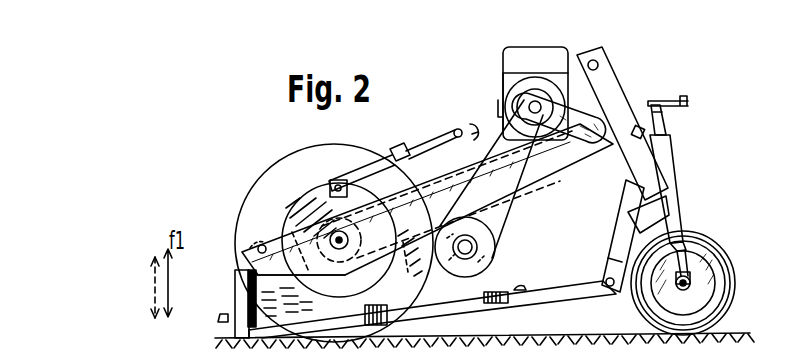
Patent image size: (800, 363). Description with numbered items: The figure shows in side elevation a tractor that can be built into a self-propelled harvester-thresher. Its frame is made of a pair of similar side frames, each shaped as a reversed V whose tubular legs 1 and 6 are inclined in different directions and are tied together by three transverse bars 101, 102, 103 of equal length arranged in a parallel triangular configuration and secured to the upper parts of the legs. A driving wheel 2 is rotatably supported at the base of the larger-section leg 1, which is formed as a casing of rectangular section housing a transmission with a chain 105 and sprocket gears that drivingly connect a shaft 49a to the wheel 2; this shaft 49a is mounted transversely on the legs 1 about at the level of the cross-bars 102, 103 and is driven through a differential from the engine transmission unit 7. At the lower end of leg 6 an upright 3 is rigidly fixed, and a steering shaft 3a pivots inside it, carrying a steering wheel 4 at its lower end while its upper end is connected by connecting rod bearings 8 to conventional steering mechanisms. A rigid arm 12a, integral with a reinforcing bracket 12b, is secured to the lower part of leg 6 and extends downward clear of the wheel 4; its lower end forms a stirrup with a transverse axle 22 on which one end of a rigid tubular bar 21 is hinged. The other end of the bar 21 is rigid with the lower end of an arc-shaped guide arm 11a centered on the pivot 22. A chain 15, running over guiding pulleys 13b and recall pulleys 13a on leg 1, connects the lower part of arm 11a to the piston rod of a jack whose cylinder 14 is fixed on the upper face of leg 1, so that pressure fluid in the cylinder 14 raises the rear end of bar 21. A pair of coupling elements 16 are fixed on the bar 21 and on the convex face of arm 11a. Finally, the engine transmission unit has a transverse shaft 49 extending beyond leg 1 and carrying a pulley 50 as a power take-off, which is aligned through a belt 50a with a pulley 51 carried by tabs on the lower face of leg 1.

The leg 1 is at (548, 172).
The driving wheel 2 is at (290, 168).
The upright 3 is at (667, 162).
The steering shaft 3a is at (661, 119).
The steering wheel 4 is at (732, 272).
The leg 6 is at (625, 74).
The engine transmission unit 7 is at (494, 60).
The connecting rod bearings 8 is at (683, 98).
The guide arm 11a is at (236, 288).
The rigid arm 12a is at (618, 234).
The reinforcing bracket 12b is at (648, 197).
The recall pulleys 13a is at (464, 130).
The guiding pulleys 13b is at (238, 268).
The cylinder 14 is at (366, 165).
The chain 15 is at (266, 247).
The coupling elements 16 is at (224, 318).
The tubular bar 21 is at (559, 296).
The transverse axle 22 is at (610, 286).
The transverse shaft 49 is at (538, 82).
The shaft 49a is at (596, 150).
The pulley 50 is at (522, 182).
The belt 50a is at (462, 194).
The pulley 51 is at (492, 272).
The bar 101 is at (603, 60).
The bar 102 is at (470, 119).
The bar 103 is at (637, 126).
The chain 105 is at (418, 250).